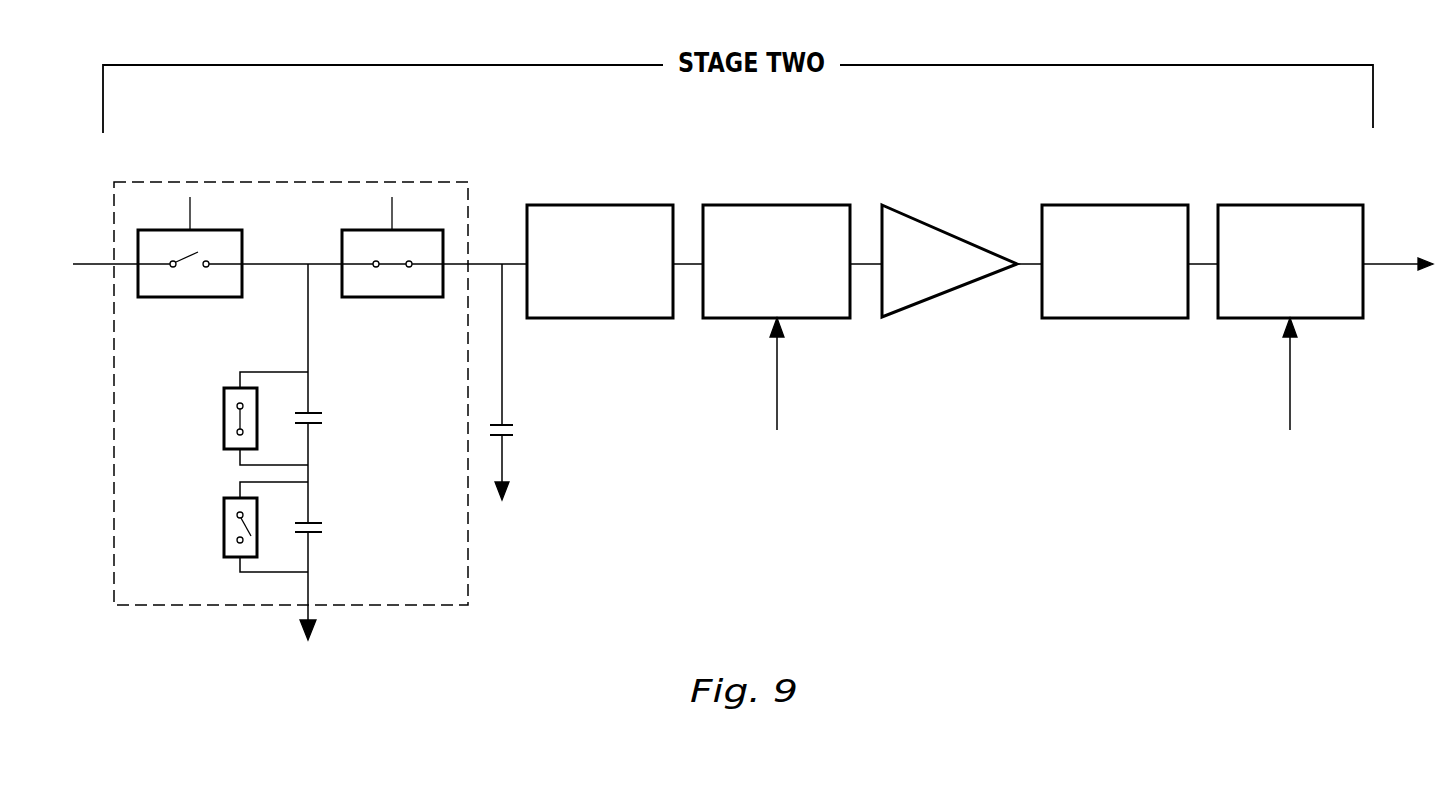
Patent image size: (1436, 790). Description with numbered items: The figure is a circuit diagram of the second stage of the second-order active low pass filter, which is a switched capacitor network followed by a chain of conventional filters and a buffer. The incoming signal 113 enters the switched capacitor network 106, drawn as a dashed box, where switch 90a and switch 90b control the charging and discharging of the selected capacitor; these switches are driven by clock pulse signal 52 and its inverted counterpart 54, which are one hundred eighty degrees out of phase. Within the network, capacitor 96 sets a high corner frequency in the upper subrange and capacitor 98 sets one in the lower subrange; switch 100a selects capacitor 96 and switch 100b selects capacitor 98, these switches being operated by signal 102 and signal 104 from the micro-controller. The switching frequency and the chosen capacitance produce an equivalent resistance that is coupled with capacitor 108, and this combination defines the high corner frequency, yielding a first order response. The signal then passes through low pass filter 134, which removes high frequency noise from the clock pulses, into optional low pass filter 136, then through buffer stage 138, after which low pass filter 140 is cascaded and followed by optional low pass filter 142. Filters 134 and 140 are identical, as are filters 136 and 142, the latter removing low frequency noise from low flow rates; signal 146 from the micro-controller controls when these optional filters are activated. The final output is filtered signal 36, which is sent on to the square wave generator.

The input signal line 113 is at (83, 263).
The switched capacitor network 106 is at (445, 182).
The switch 90a is at (210, 297).
The switch 90b is at (425, 297).
The clock pulse signal 52 is at (190, 210).
The inverted clock pulse signal 54 is at (392, 210).
The capacitor 96 is at (315, 412).
The capacitor 98 is at (315, 522).
The switch 100a is at (225, 449).
The switch 100b is at (226, 558).
The signal 102 is at (224, 418).
The signal 104 is at (224, 527).
The capacitor 108 is at (513, 436).
The low pass filter 134 is at (556, 318).
The low pass filter 136 is at (822, 318).
The buffer stage 138 is at (950, 288).
The low pass filter 140 is at (1162, 318).
The low pass filter 142 is at (1340, 318).
The signal 146 is at (777, 395).
The filtered signal 36 is at (1410, 258).